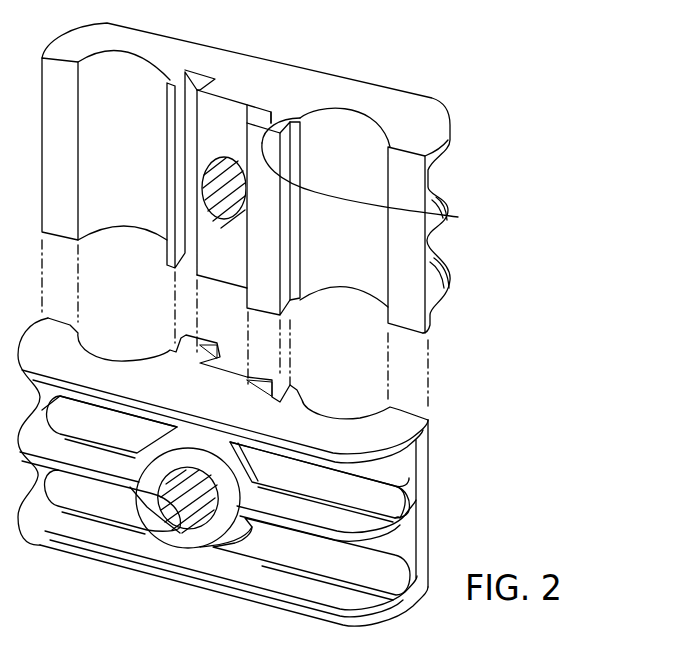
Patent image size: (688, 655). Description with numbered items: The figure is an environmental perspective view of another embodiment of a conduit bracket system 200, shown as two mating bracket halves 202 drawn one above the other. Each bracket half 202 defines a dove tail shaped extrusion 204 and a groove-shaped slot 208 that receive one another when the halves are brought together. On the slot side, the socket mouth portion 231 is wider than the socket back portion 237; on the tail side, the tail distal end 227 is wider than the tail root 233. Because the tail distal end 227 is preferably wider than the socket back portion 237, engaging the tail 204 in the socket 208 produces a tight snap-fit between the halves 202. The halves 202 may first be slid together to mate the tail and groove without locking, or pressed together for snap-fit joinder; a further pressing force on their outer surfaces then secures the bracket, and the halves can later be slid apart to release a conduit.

The clamp assembly 200 is at (555, 106).
The bracket halves 202 is at (460, 139).
The dove tail shaped extrusion 204 is at (276, 118).
The groove-shaped slot 208 is at (213, 64).
The tail distal end 227 is at (386, 175).
The socket mouth portion 231 is at (165, 84).
The tail root 233 is at (308, 122).
The socket back portion 237 is at (200, 60).